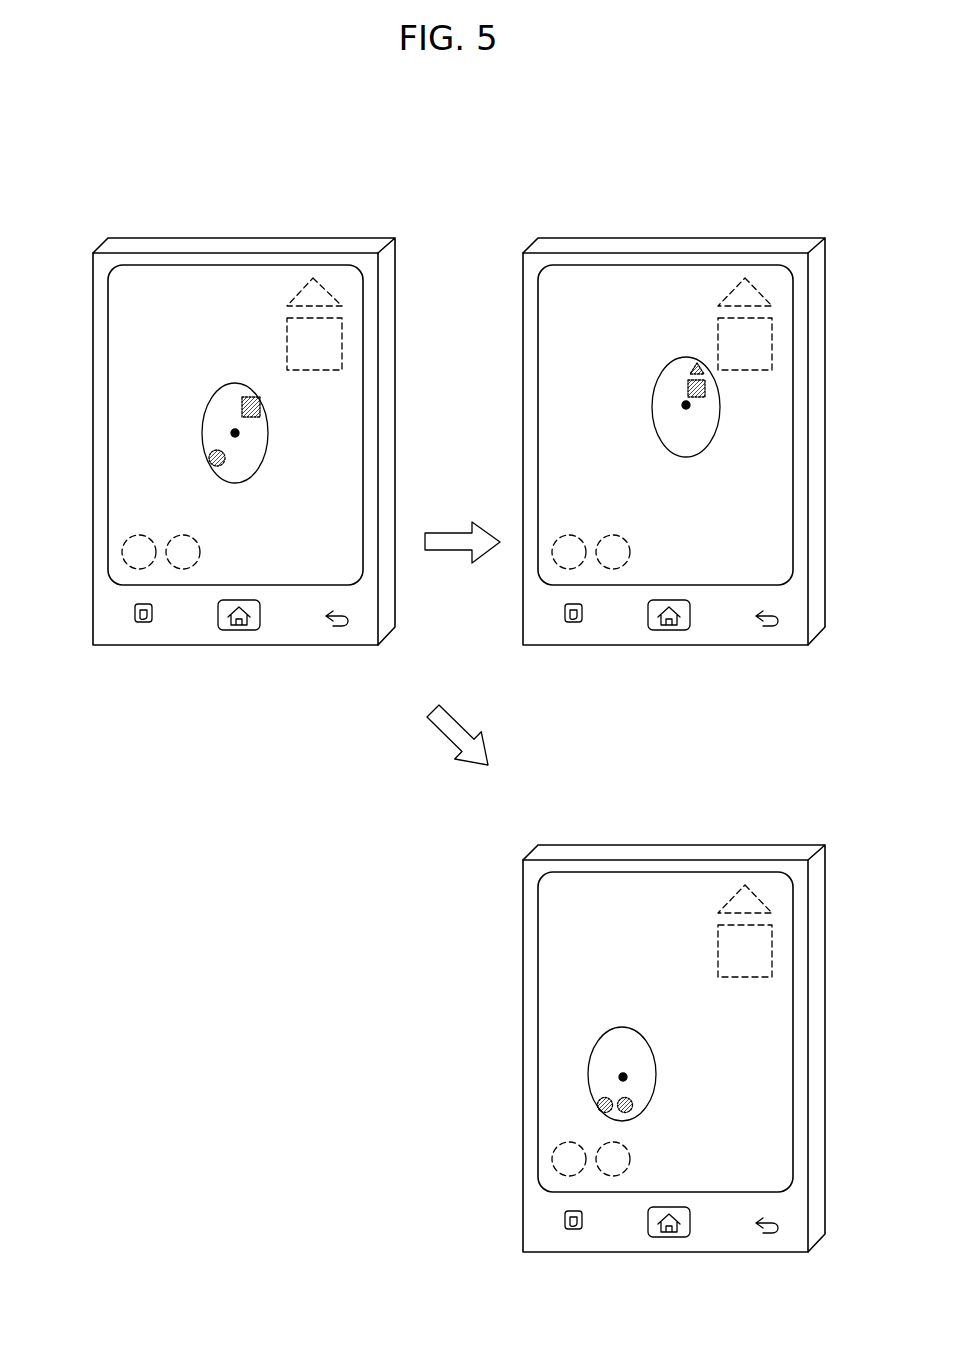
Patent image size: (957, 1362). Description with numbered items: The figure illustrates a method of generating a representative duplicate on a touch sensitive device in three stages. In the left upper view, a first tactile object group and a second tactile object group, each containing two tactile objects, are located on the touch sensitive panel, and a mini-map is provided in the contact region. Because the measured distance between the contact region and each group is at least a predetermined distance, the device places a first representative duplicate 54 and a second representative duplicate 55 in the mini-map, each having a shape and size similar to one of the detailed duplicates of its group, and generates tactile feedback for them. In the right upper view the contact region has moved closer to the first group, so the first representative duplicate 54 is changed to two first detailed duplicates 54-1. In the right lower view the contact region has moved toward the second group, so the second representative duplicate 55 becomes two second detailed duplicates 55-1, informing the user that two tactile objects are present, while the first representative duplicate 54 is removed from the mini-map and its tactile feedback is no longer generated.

The first representative duplicate 54 is at (248, 396).
The first detailed duplicates 54-1 is at (688, 390).
The second representative duplicate 55 is at (209, 457).
The second detailed duplicates 55-1 is at (609, 1112).